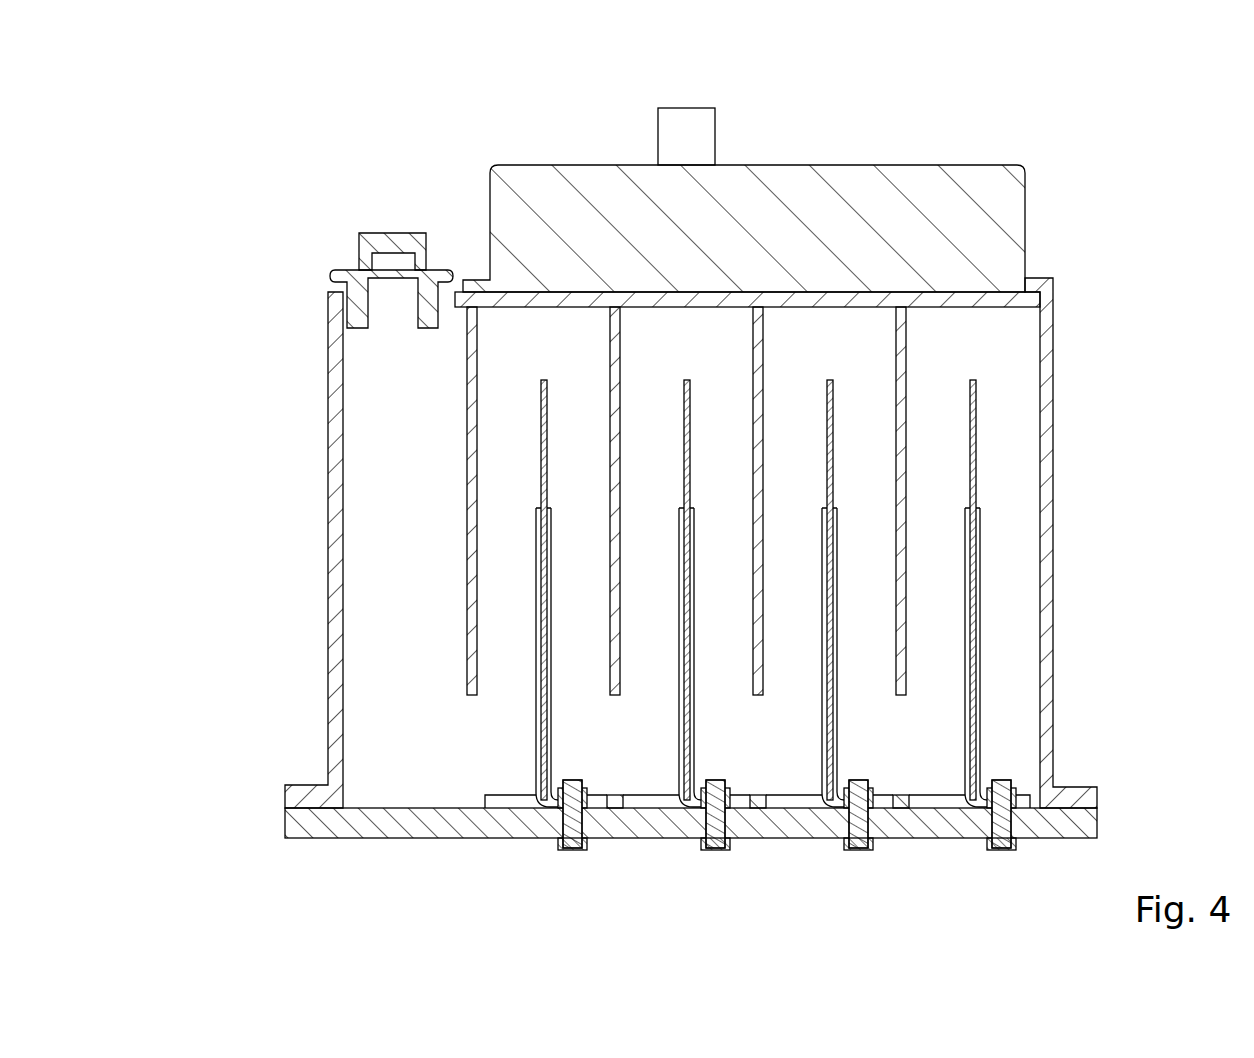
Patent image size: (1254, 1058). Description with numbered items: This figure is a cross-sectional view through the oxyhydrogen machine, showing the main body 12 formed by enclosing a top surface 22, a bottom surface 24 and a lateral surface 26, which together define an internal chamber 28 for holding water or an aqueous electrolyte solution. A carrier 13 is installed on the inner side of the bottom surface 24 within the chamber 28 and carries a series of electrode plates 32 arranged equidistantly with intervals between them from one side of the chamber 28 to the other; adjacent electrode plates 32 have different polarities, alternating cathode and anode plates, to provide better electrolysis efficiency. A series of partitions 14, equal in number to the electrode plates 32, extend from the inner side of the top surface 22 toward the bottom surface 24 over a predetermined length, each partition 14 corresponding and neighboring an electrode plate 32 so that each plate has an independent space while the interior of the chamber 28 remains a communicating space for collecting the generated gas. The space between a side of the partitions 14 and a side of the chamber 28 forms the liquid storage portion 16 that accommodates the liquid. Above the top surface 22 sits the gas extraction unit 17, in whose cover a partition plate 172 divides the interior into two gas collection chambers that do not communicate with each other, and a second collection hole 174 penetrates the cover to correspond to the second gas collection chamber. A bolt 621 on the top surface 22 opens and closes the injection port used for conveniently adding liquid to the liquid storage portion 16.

The main body 12 is at (265, 256).
The carrier 13 is at (933, 793).
The partitions 14 is at (898, 680).
The liquid storage portion 16 is at (403, 588).
The gas extraction unit 17 is at (1020, 126).
The top surface 22 is at (453, 290).
The bottom surface 24 is at (398, 825).
The lateral surface 26 is at (321, 542).
The chamber 28 is at (485, 740).
The electrode plates 32 is at (545, 395).
The partition plate 172 is at (848, 188).
The second collection hole 174 is at (672, 140).
The bolt 621 is at (375, 238).